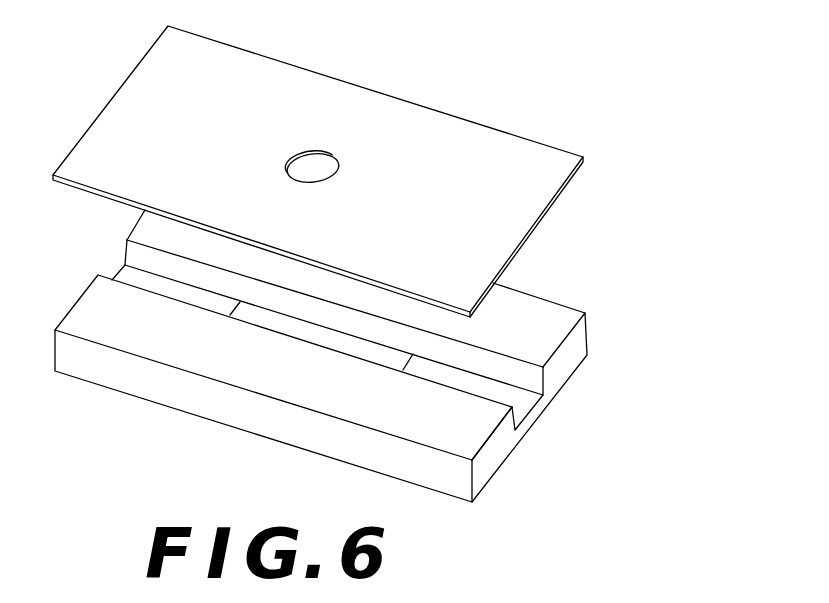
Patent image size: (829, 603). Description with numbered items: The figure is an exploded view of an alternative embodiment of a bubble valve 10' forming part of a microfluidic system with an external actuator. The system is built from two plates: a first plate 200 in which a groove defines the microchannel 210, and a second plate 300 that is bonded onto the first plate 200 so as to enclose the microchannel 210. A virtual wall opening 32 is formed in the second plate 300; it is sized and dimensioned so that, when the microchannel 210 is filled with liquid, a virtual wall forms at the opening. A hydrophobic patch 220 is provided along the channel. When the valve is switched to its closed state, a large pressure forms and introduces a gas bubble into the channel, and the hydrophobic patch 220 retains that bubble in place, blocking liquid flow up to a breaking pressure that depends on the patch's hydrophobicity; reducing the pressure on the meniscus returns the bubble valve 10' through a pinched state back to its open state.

The bubble valve 10' is at (652, 86).
The second plate 300 is at (400, 107).
The virtual wall opening 32 is at (316, 153).
The first plate 200 is at (515, 315).
The microchannel 210 is at (510, 395).
The hydrophobic patch 220 is at (300, 327).